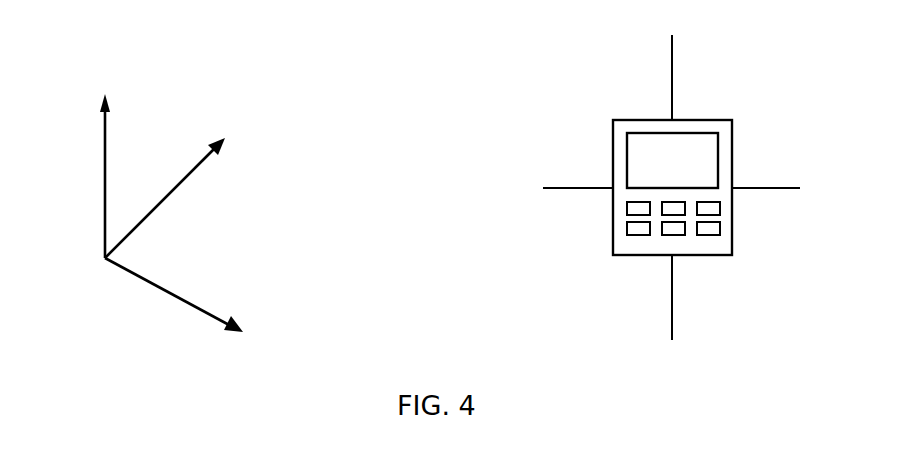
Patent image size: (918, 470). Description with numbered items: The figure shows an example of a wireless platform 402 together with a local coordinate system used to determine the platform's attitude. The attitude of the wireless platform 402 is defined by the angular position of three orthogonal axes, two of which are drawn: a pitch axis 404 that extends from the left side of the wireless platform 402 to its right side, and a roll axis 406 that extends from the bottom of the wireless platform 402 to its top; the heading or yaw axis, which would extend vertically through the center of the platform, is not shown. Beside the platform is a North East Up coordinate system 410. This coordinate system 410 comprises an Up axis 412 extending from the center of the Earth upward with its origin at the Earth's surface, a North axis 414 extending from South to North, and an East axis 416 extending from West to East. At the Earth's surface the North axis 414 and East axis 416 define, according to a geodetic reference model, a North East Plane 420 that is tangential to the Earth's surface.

The wireless platform 402 is at (705, 120).
The pitch axis 404 is at (784, 188).
The roll axis 406 is at (672, 310).
The North East Up (NEU) coordinate system 410 is at (201, 188).
The Up axis 412 is at (105, 190).
The North axis 414 is at (160, 208).
The East axis 416 is at (154, 288).
The North East Plane 420 is at (193, 261).